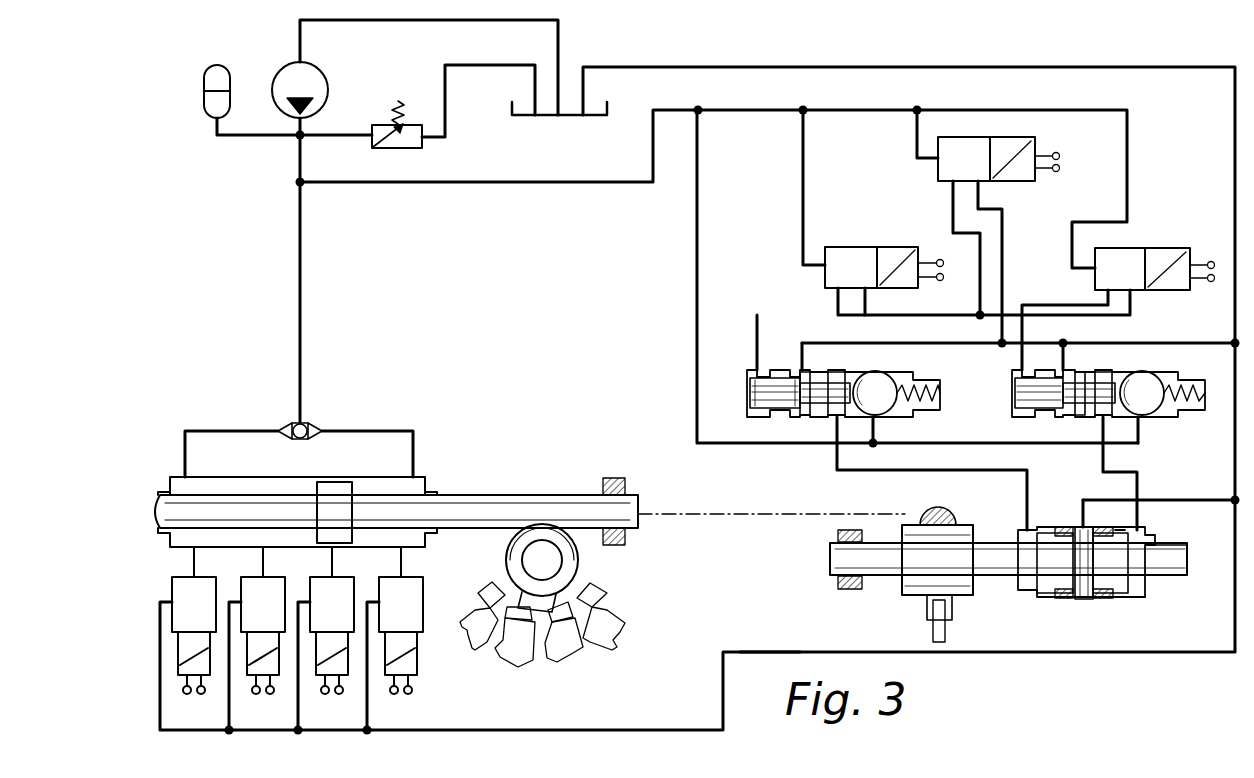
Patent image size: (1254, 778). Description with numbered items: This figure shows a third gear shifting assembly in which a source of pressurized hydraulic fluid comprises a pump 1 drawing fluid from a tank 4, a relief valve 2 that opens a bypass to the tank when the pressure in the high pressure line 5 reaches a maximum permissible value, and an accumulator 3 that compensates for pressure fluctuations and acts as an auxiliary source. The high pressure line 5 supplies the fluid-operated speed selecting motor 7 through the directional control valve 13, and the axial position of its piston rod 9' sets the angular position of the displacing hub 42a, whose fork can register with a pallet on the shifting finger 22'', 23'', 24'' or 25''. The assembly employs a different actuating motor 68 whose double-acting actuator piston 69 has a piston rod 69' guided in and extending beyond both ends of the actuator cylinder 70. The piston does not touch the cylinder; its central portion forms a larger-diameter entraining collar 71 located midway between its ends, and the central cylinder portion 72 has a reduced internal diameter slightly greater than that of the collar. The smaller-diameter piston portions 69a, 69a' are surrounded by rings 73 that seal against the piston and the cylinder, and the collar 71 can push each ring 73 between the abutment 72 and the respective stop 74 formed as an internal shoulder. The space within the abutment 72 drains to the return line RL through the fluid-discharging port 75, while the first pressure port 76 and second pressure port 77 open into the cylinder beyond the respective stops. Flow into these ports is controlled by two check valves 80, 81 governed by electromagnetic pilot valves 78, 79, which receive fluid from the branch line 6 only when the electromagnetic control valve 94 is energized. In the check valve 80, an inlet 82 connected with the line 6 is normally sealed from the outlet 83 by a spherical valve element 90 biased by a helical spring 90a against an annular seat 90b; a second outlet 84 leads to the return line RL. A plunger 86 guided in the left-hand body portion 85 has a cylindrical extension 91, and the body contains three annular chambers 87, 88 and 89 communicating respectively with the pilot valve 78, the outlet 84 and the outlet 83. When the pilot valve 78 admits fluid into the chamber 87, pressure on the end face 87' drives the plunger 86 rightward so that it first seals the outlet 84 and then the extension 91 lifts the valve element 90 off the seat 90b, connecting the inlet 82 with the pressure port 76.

The pump 1 is at (322, 72).
The relief valve 2 is at (372, 115).
The accumulator 3 is at (203, 80).
The tank 4 is at (550, 118).
The high pressure line 5 is at (302, 248).
The branch of high pressure line 6 is at (473, 184).
The speed selecting motor 7 is at (428, 440).
The piston rod 9' is at (530, 508).
The directional control valve 13 is at (308, 423).
The shifting finger 22'' is at (468, 624).
The shifting finger 23'' is at (507, 650).
The shifting finger 24'' is at (575, 647).
The shifting finger 25'' is at (621, 617).
The displacing hub 42a is at (910, 590).
The actuating motor 68 is at (1013, 608).
The actuator piston 69 is at (1050, 578).
The piston rod 69' is at (864, 568).
The smaller-diameter piston portion 69a is at (1074, 554).
The smaller-diameter piston portion 69a' is at (1162, 561).
The actuator cylinder 70 is at (1136, 598).
The entraining collar 71 is at (1083, 588).
The central cylinder portion 72 is at (1065, 528).
The ring 73 is at (1072, 598).
The stop 74 is at (1120, 520).
The fluid-discharging port 75 is at (1170, 500).
The first pressure port 76 is at (1026, 494).
The second pressure port 77 is at (1138, 482).
The electromagnetic pilot valve 78 is at (838, 262).
The electromagnetic pilot valve 79 is at (1124, 258).
The check valve 80 is at (932, 412).
The check valve 81 is at (1173, 418).
The inlet 82 is at (876, 428).
The outlet 83 is at (836, 438).
The second outlet 84 is at (770, 366).
The left-hand body portion 85 is at (806, 366).
The plunger 86 is at (770, 408).
The annular chamber 87 is at (753, 388).
The left-hand end face 87' is at (752, 404).
The annular chamber 88 is at (805, 380).
The annular chamber 89 is at (838, 380).
The spherical valve element 90 is at (880, 372).
The helical spring 90a is at (940, 390).
The annular seat 90b is at (855, 462).
The cylindrical extension 91 is at (822, 404).
The electromagnetic control valve 94 is at (950, 166).
The return line RL is at (762, 652).